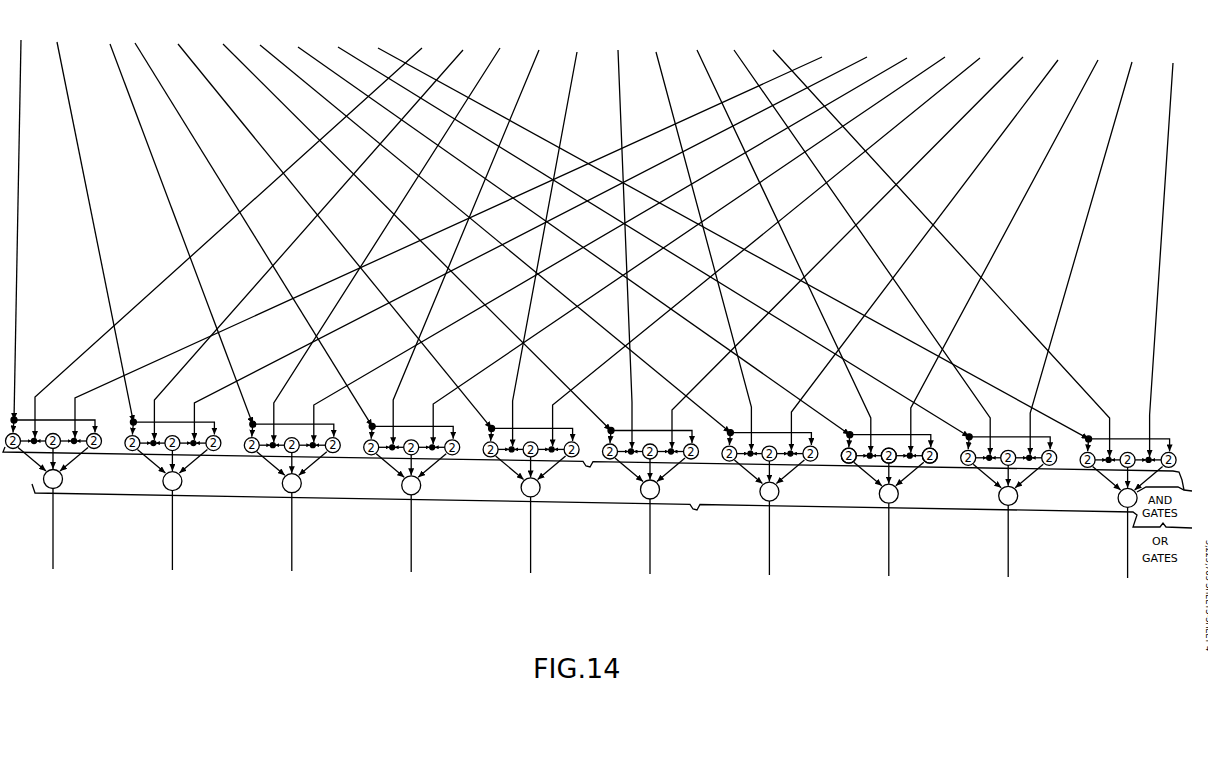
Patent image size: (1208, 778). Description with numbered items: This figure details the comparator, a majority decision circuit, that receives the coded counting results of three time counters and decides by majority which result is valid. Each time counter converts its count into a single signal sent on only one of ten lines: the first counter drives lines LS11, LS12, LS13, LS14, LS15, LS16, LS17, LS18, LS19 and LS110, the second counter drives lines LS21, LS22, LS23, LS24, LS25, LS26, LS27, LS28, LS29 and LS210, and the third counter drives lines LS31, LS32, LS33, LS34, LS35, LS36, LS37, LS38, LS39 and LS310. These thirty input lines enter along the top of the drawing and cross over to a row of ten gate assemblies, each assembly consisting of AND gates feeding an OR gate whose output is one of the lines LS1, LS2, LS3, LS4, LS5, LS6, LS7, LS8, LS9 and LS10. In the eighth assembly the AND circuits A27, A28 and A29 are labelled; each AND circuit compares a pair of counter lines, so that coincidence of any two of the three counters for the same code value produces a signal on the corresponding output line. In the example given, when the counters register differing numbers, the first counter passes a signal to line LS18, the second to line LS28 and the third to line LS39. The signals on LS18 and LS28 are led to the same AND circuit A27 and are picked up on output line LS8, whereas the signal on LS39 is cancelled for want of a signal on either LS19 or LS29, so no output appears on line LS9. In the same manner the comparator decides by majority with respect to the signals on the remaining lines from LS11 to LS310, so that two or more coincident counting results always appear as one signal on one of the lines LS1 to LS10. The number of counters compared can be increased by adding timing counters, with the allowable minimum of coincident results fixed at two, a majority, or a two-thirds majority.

The input line LS11 is at (26, 222).
The input line LS12 is at (57, 43).
The input line LS13 is at (172, 225).
The input line LS14 is at (135, 43).
The input line LS15 is at (328, 226).
The input line LS16 is at (223, 43).
The input line LS17 is at (484, 229).
The input line LS18 is at (298, 46).
The input line LS19 is at (638, 231).
The input line LS110 is at (378, 47).
The input line LS21 is at (234, 234).
The input line LS22 is at (463, 49).
The input line LS23 is at (395, 236).
The input line LS24 is at (539, 49).
The input line LS25 is at (554, 238).
The input line LS26 is at (618, 49).
The input line LS27 is at (698, 240).
The input line LS28 is at (697, 49).
The input line LS29 is at (854, 242).
The input line LS210 is at (773, 49).
The input line LS31 is at (456, 238).
The input line LS32 is at (867, 56).
The input line LS33 is at (621, 240).
The input line LS34 is at (945, 56).
The input line LS35 is at (777, 242).
The input line LS36 is at (1023, 56).
The input line LS37 is at (937, 244).
The input line LS38 is at (1098, 58).
The input line LS39 is at (1094, 246).
The input line LS310 is at (1173, 61).
The output line LS1 is at (53, 519).
The output line LS2 is at (172, 520).
The output line LS3 is at (292, 522).
The output line LS4 is at (411, 524).
The output line LS5 is at (531, 526).
The output line LS6 is at (650, 528).
The output line LS7 is at (769, 530).
The output line LS8 is at (889, 532).
The output line LS9 is at (1008, 534).
The output line LS10 is at (1128, 536).
The AND circuit A27 is at (841, 465).
The AND circuit A28 is at (884, 442).
The AND circuit A29 is at (929, 465).